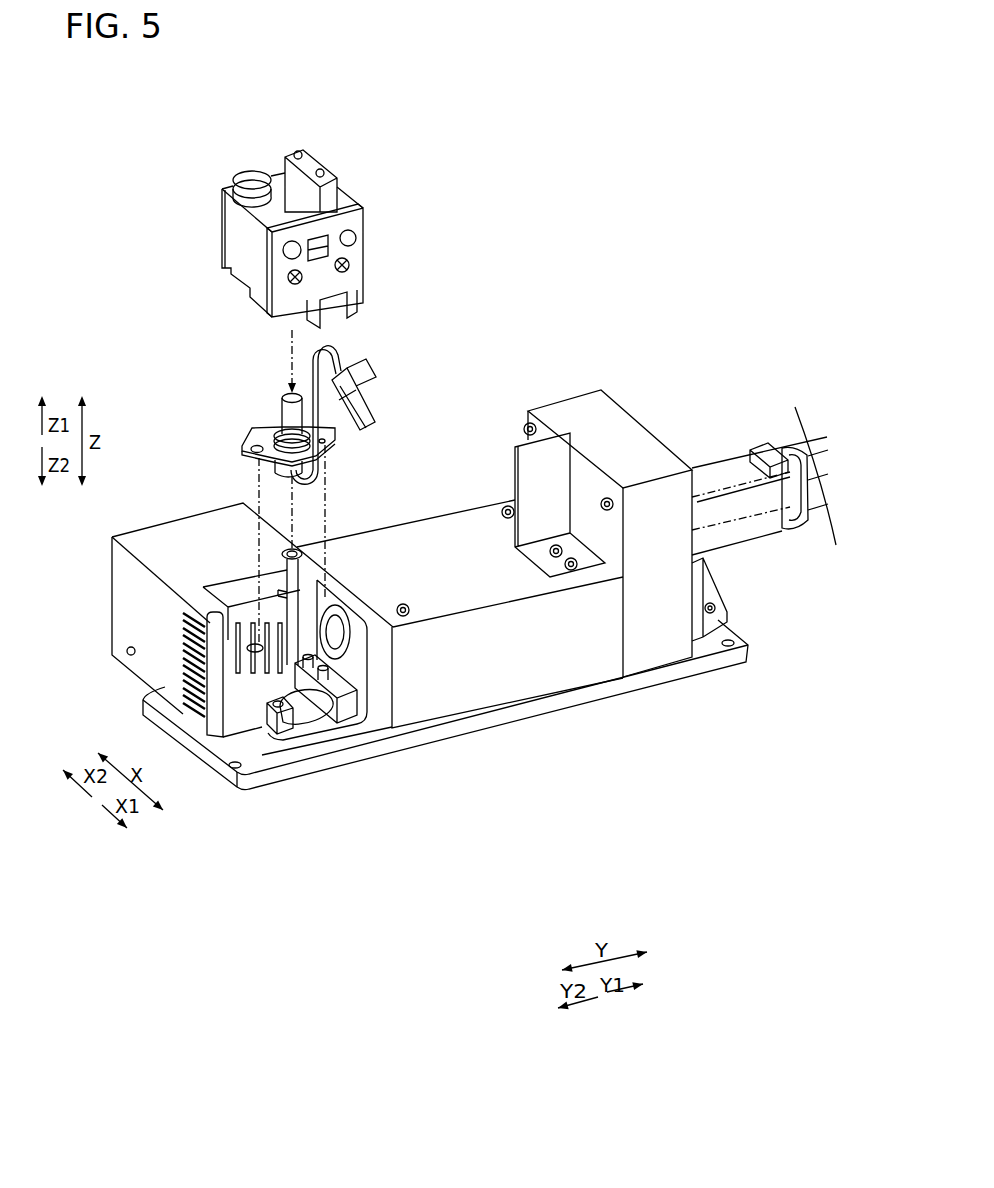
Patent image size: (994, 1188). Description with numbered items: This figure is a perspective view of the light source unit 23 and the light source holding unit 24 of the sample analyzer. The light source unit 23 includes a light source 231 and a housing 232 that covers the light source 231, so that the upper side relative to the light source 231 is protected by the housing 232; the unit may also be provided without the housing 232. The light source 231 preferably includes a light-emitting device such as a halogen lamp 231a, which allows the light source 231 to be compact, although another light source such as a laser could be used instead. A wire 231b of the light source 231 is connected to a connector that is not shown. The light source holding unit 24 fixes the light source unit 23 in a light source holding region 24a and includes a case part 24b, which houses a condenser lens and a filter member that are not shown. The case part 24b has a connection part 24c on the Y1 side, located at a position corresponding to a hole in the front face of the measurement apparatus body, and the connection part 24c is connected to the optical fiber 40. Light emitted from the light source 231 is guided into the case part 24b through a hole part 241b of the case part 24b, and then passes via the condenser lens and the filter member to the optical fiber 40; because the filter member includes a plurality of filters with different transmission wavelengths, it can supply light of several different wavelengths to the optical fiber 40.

The light source unit 23 is at (261, 308).
The housing 232 is at (211, 192).
The light source 231 is at (311, 411).
The halogen lamp 231a is at (288, 418).
The wire 231b is at (375, 416).
The light source holding unit 24 is at (461, 756).
The light source holding region 24a is at (287, 698).
The case part 24b is at (518, 668).
The connection part 24c is at (743, 470).
The hole part 241b is at (337, 677).
The optical fiber 40 is at (752, 513).